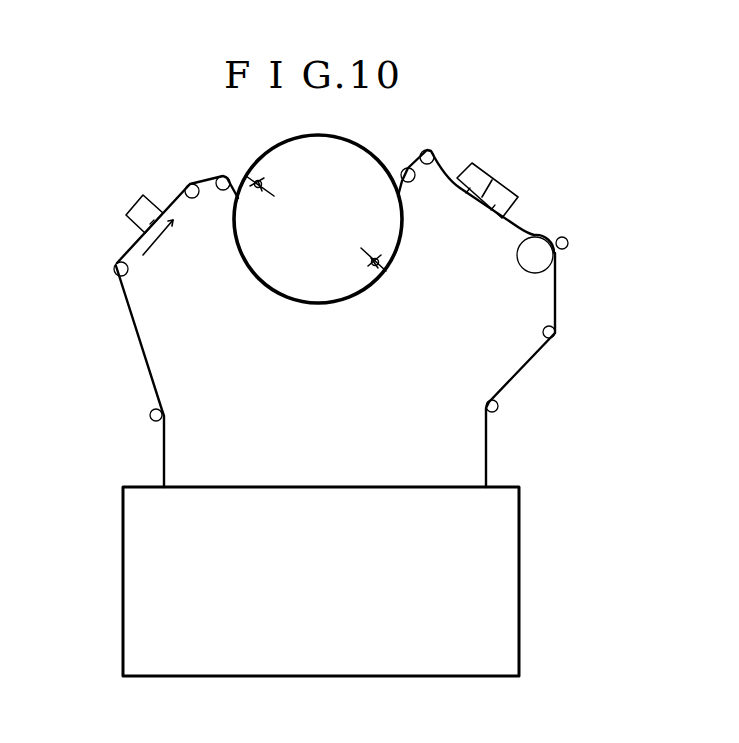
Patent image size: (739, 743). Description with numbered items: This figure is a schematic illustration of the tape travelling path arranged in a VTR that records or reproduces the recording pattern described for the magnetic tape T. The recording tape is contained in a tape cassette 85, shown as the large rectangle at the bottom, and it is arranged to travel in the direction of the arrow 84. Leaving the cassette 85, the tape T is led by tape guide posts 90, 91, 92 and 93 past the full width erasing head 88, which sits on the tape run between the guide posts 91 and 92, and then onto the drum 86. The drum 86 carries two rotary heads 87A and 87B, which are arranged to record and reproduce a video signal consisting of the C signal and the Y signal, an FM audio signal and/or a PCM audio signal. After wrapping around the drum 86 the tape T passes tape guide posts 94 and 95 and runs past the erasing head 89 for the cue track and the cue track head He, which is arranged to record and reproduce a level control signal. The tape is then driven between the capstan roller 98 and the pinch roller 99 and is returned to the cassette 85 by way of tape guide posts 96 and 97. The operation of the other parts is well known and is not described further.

The arrow 84 is at (164, 244).
The tape cassette 85 is at (519, 530).
The drum 86 is at (362, 137).
The rotary head 87A is at (265, 180).
The rotary head 87B is at (375, 257).
The full width erasing head 88 is at (142, 196).
The erasing head for the cue track 89 is at (500, 181).
The cue track head He is at (512, 186).
The tape guide post 90 is at (150, 414).
The tape guide post 91 is at (126, 274).
The tape guide post 92 is at (191, 198).
The tape guide post 93 is at (222, 190).
The tape guide post 94 is at (409, 183).
The tape guide post 95 is at (430, 164).
The tape guide post 96 is at (543, 328).
The tape guide post 97 is at (498, 409).
The capstan roller 98 is at (569, 242).
The pinch roller 99 is at (518, 252).
The magnetic tape T is at (524, 364).